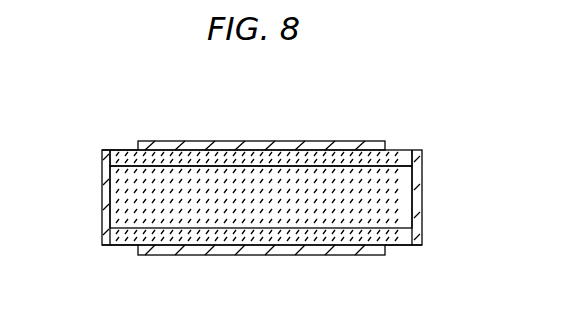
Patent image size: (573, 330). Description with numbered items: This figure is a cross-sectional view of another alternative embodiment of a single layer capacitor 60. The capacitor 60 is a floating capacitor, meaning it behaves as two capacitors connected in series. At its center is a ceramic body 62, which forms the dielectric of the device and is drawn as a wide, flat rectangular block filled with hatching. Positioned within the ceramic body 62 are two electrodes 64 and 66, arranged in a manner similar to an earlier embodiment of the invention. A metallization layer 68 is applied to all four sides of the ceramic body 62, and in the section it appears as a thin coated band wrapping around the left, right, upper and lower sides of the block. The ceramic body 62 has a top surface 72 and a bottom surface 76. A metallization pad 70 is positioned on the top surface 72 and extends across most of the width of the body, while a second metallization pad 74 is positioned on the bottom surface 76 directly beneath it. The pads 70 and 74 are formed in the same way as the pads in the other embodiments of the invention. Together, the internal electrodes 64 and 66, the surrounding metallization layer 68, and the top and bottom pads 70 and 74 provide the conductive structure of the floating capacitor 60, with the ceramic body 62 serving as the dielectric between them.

The single layer capacitor 60 is at (418, 120).
The ceramic body 62 is at (407, 193).
The electrode 64 is at (118, 152).
The electrode 66 is at (125, 247).
The metallization layer 68 is at (101, 197).
The metallization pad 70 is at (262, 141).
The top surface 72 is at (401, 149).
The metallization pad 74 is at (265, 255).
The bottom surface 76 is at (395, 248).